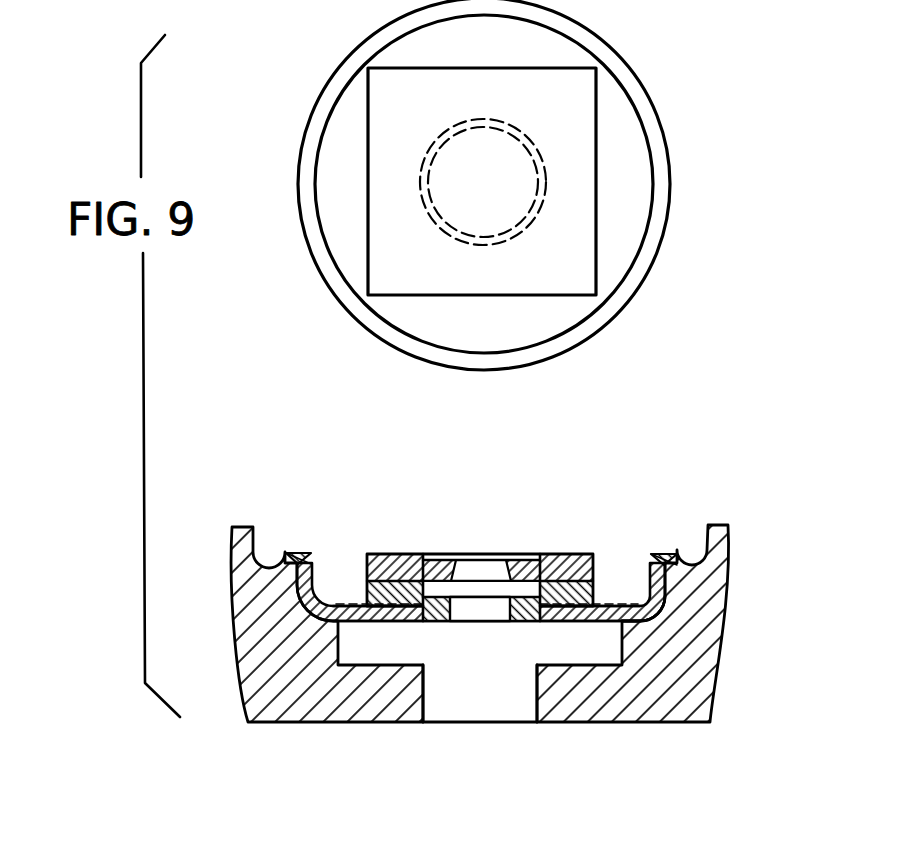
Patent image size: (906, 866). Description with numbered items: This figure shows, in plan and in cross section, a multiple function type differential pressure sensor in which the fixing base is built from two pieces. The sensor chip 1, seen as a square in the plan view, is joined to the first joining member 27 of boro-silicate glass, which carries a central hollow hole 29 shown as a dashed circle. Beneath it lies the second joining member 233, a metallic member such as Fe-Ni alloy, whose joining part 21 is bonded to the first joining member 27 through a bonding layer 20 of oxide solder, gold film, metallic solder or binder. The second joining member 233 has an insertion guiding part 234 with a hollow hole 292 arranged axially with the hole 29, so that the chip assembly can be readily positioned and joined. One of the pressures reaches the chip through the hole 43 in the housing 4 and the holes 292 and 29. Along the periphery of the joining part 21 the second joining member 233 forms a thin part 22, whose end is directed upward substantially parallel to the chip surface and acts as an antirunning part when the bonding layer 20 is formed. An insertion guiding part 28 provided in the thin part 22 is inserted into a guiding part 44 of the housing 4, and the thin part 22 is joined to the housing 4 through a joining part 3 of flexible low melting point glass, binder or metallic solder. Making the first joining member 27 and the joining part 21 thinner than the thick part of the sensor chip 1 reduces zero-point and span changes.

The multiple function type differential pressure sensor chip 1 is at (399, 282).
The first joining member 27 is at (563, 587).
The thin part 22 is at (617, 295).
The hollow hole 29 is at (480, 590).
The hollow hole 292 is at (485, 613).
The bonding layer 20 is at (605, 605).
The joining part 21 is at (587, 622).
The joining part 3 is at (672, 555).
The guiding part 44 is at (321, 610).
The second joining member 233 is at (393, 613).
The insertion guiding part 234 is at (530, 608).
The hole 43 is at (438, 695).
The housing 4 is at (637, 695).
The insertion guiding part 28 is at (648, 613).